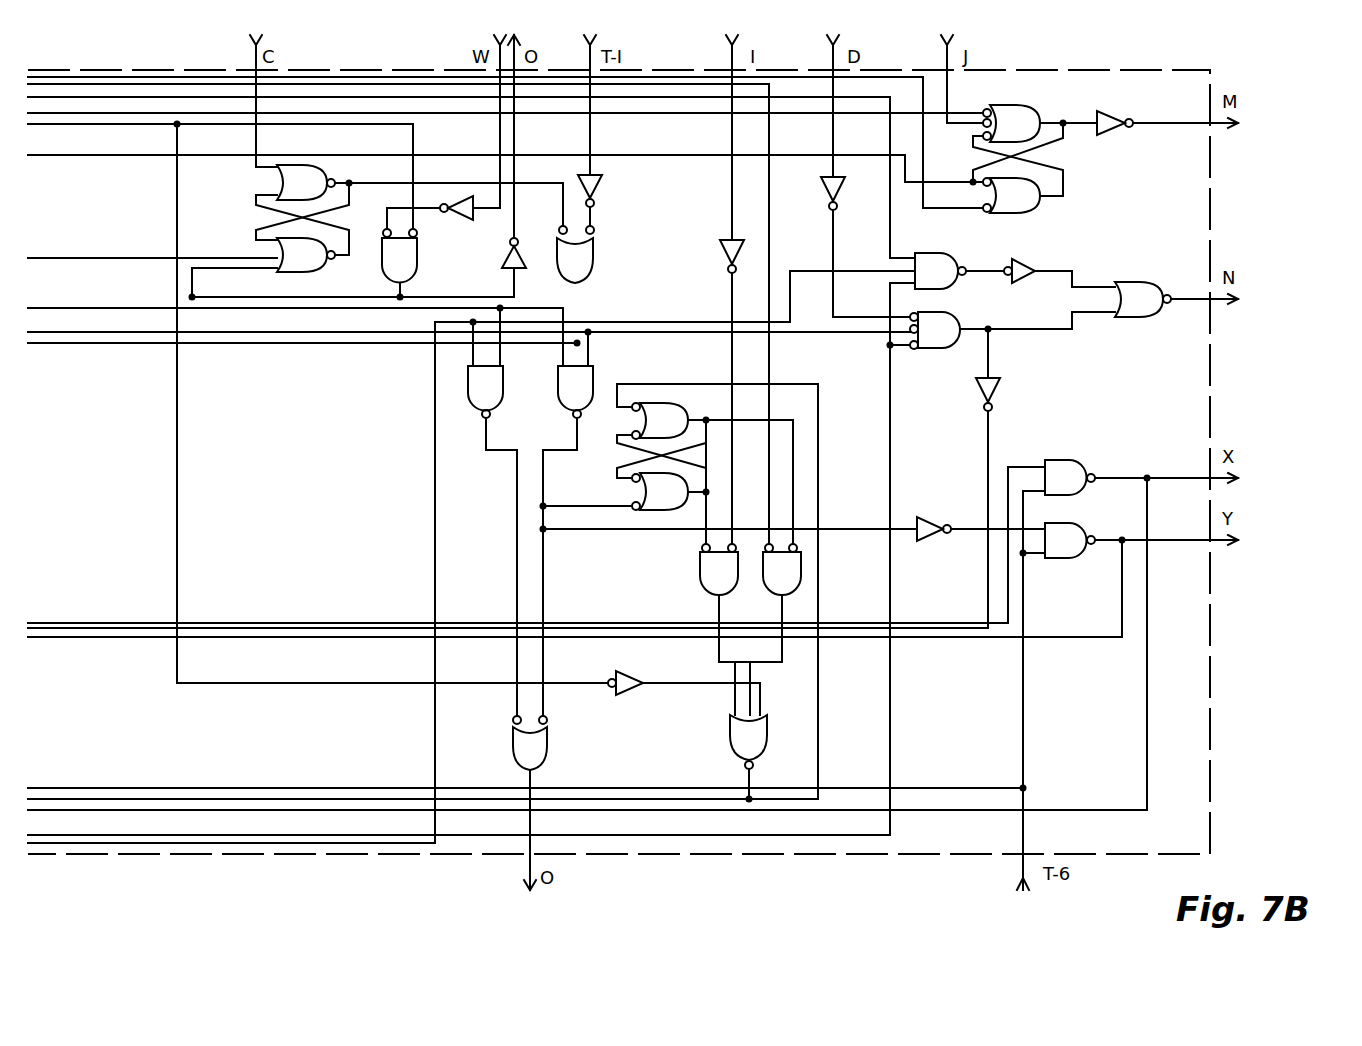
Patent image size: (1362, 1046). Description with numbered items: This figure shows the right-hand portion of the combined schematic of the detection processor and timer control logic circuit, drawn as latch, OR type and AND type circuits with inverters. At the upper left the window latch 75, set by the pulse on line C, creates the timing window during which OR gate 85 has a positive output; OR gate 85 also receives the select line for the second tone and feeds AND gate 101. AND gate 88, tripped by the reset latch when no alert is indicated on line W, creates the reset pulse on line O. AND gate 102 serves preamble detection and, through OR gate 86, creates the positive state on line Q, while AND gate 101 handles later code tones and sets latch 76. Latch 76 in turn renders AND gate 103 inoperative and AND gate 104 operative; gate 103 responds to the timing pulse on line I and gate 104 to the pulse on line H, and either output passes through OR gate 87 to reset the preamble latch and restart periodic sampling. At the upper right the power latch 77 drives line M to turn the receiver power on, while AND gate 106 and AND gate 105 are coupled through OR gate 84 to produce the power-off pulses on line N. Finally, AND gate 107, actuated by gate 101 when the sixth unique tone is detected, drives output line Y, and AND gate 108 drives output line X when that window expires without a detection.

The window latch 75 is at (245, 222).
The latch 76 is at (606, 463).
The power latch 77 is at (1075, 163).
The OR gate 84 is at (1146, 286).
The OR gate 85 is at (593, 252).
The OR gate 86 is at (547, 742).
The OR gate 87 is at (730, 728).
The AND gate 88 is at (418, 252).
The AND gate 101 is at (588, 378).
The AND gate 102 is at (492, 400).
The AND gate 103 is at (699, 563).
The AND gate 104 is at (766, 590).
The AND gate 105 is at (943, 344).
The AND gate 106 is at (950, 268).
The AND gate 107 is at (1077, 550).
The AND gate 108 is at (1077, 471).